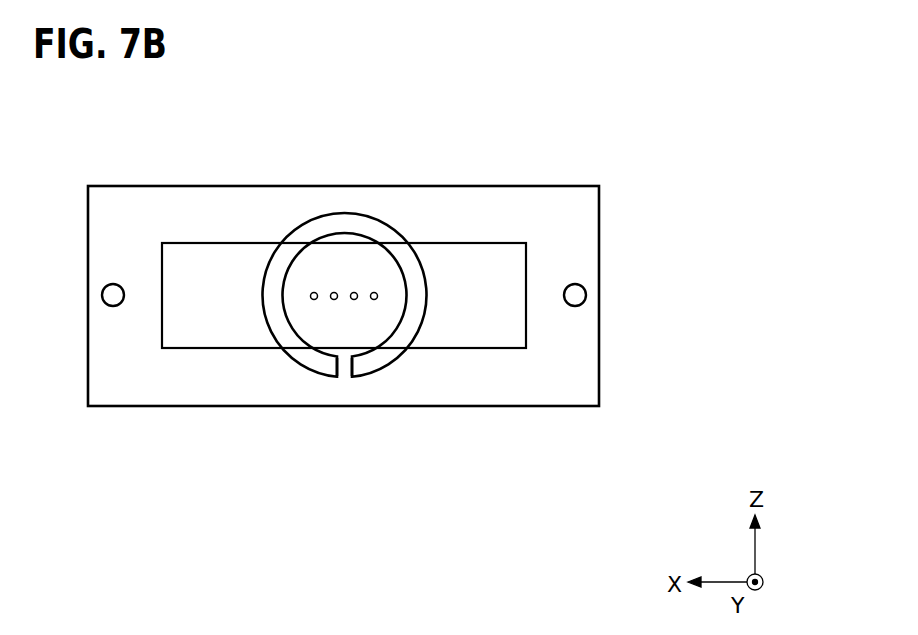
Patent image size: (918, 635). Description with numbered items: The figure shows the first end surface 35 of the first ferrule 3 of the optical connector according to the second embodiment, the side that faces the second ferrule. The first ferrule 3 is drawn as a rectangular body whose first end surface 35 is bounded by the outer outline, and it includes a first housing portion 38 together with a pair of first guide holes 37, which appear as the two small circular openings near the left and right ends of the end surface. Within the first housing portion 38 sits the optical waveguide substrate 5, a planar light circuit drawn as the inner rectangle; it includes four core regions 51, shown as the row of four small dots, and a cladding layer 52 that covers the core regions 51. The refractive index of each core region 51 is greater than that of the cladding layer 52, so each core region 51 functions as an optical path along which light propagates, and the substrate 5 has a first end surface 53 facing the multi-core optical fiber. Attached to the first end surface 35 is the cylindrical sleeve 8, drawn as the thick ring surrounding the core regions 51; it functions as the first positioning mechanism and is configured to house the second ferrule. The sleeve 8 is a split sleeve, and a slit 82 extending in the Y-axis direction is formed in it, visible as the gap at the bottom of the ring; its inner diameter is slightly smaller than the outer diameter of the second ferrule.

The first ferrule 3 is at (556, 182).
The optical waveguide substrate 5 is at (459, 272).
The cylindrical sleeve 8 is at (352, 213).
The first end surface 35 is at (600, 222).
The first guide holes 37 is at (102, 296).
The first housing portion 38 is at (486, 337).
The core regions 51 is at (314, 300).
The cladding layer 52 is at (197, 333).
The first end surface of the optical waveguide substrate 53 is at (218, 260).
The slit 82 is at (351, 376).